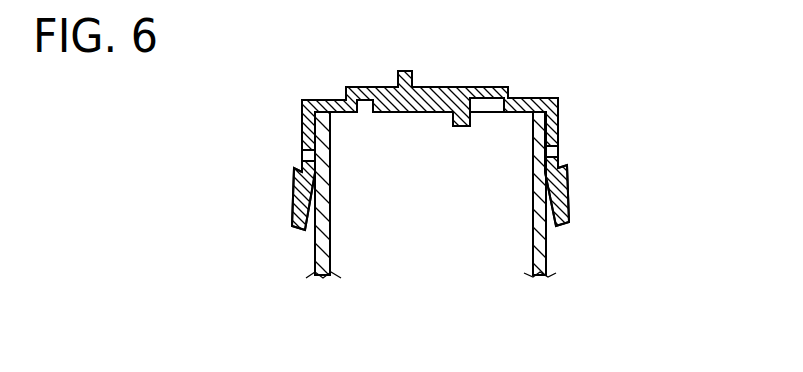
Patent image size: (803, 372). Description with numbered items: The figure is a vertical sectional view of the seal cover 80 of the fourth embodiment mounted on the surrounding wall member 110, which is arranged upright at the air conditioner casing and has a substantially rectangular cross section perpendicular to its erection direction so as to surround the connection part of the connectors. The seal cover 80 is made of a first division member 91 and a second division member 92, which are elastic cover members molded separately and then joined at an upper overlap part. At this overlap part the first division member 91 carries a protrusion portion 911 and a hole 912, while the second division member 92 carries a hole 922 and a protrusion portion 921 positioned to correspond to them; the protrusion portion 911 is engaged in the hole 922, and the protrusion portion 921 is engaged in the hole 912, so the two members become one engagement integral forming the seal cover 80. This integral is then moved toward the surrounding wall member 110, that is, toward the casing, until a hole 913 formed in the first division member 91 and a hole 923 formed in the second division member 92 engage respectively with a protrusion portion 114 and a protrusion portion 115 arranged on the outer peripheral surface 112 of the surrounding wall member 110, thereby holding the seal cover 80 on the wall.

The seal cover 80 is at (552, 86).
The first division member 91 is at (302, 106).
The second division member 92 is at (558, 119).
The protrusion portion 911 is at (460, 125).
The hole 912 is at (393, 91).
The hole 913 is at (302, 153).
The protrusion portion 921 is at (412, 84).
The hole 922 is at (484, 109).
The hole 923 is at (558, 151).
The surrounding wall member 110 is at (540, 253).
The outer peripheral surface 112 is at (547, 237).
The protrusion portion 114 is at (293, 169).
The protrusion portion 115 is at (565, 167).